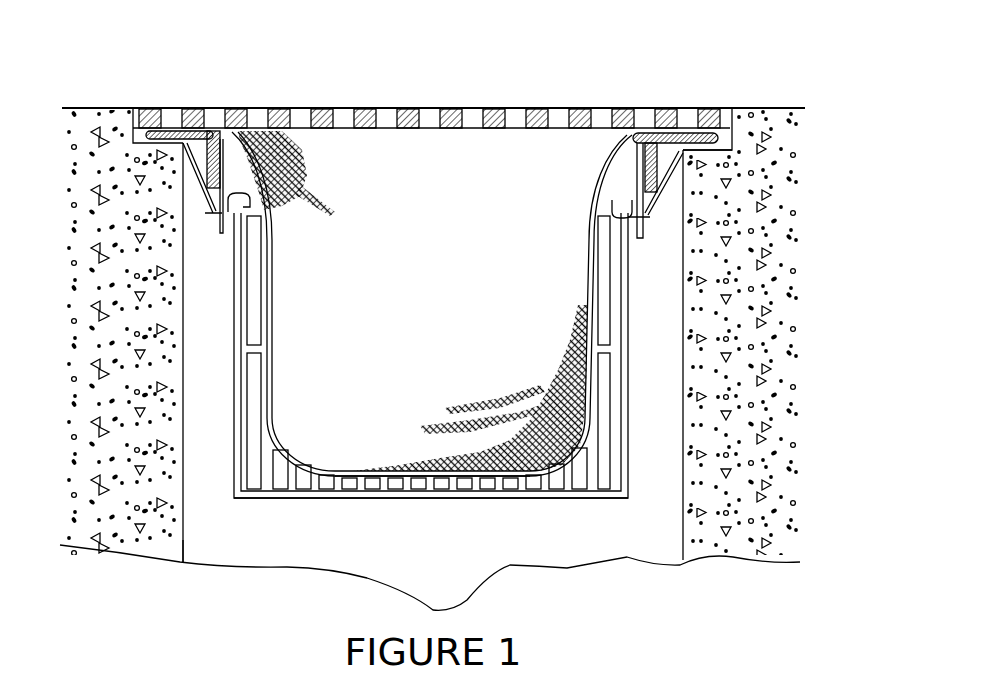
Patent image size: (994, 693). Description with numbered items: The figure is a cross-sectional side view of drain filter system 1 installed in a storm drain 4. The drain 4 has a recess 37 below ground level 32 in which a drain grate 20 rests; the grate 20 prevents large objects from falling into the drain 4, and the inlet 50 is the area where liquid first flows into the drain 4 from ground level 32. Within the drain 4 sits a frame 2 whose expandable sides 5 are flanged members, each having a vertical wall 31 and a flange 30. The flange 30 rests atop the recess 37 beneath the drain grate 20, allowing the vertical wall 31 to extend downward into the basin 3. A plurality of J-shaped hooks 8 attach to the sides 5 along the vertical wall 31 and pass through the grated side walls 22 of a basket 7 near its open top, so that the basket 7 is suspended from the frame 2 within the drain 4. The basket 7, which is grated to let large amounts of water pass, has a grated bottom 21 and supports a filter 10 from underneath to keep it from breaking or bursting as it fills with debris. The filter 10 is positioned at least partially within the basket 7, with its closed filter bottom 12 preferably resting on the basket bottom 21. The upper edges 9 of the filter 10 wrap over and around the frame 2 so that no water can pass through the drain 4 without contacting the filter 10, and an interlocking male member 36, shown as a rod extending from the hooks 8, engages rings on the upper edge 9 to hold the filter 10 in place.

The drain filter system 1 is at (262, 530).
The frame 2 is at (676, 118).
The basin 3 is at (633, 530).
The drain 4 is at (465, 80).
The sides 5 is at (672, 183).
The basket 7 is at (476, 502).
The J-shaped hooks 8 is at (260, 215).
The upper edges 9 is at (205, 148).
The filter 10 is at (438, 218).
The filter bottom 12 is at (348, 500).
The drain grate 20 is at (713, 117).
The grated bottom 21 is at (410, 500).
The grated side walls 22 is at (268, 457).
The flange 30 is at (146, 108).
The vertical wall 31 is at (208, 130).
The ground level 32 is at (772, 118).
The interlocking male member 36 is at (232, 218).
The recess 37 is at (730, 150).
The inlet 50 is at (128, 100).